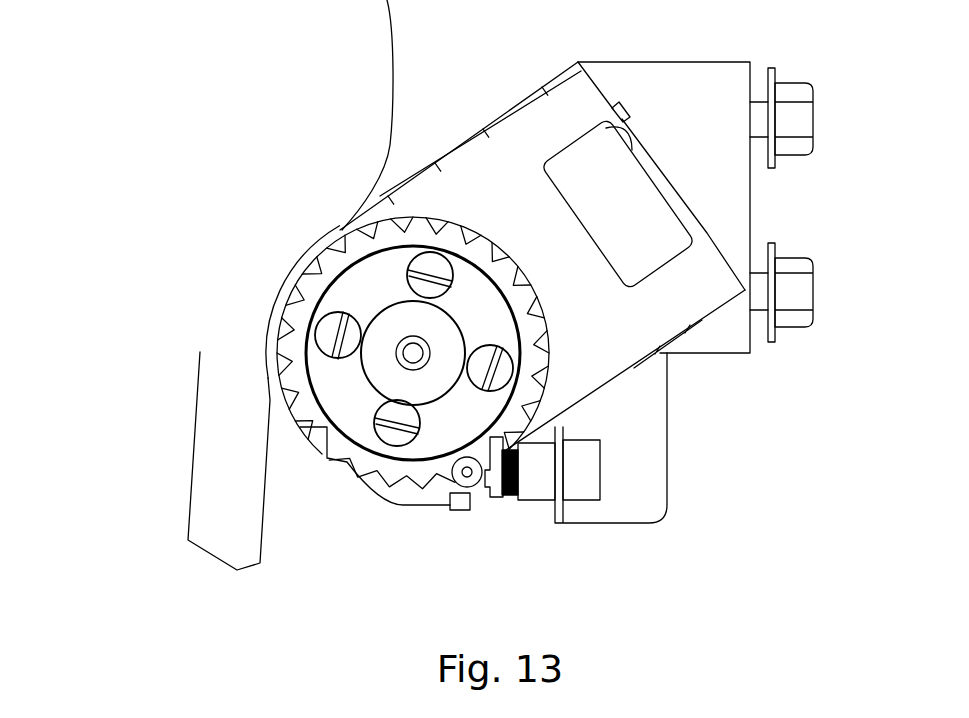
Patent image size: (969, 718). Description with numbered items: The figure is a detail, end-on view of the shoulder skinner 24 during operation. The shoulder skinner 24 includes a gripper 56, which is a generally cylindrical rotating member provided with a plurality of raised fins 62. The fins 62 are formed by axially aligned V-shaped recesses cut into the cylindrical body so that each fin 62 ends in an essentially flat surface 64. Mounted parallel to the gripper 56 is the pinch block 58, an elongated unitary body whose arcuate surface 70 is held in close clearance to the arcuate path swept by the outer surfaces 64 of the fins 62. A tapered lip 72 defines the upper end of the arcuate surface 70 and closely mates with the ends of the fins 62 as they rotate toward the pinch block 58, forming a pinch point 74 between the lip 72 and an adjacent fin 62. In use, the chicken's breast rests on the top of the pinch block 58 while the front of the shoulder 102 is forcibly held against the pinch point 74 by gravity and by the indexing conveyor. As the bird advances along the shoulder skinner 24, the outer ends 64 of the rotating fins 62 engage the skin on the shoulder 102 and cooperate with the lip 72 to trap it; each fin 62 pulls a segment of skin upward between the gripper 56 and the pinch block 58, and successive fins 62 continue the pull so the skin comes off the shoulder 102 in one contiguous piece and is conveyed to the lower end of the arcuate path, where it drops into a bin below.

The shoulder skinner 24 is at (727, 549).
The gripper 56 is at (362, 417).
The pinch block 58 is at (428, 183).
The fins 62 is at (326, 456).
The flat surface 64 is at (283, 343).
The arcuate surface 70 is at (548, 383).
The tapered lip 72 is at (342, 230).
The pinch point 74 is at (333, 230).
The shoulder 102 is at (240, 260).